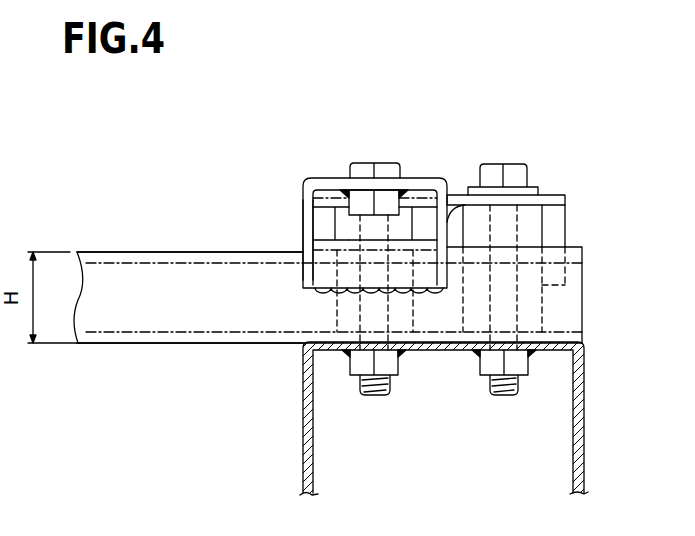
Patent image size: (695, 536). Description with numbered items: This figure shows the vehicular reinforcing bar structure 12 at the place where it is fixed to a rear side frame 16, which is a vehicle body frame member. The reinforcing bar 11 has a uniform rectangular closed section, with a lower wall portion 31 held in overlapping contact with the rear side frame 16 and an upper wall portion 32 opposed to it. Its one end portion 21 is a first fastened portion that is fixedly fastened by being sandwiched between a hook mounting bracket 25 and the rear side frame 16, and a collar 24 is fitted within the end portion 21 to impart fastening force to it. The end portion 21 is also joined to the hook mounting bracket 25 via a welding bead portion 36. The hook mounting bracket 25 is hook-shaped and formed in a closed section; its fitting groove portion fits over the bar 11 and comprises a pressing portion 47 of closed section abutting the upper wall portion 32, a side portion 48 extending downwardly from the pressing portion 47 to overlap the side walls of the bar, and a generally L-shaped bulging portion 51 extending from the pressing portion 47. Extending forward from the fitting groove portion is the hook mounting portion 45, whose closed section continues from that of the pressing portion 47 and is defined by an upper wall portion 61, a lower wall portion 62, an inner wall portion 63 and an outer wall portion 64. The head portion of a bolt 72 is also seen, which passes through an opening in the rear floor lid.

The reinforcing bar 11 is at (143, 219).
The vehicular reinforcing bar structure 12 is at (419, 244).
The rear side frame 16 is at (229, 484).
The one end portion 21 is at (257, 251).
The collar 24 is at (560, 307).
The hook mounting bracket 25 is at (540, 155).
The lower wall portion 31 is at (163, 345).
The upper wall portion 32 is at (175, 251).
The welding bead portion 36 is at (302, 250).
The hook mounting portion 45 is at (323, 177).
The pressing portion 47 is at (333, 250).
The side portion 48 is at (335, 286).
The bulging portion 51 is at (566, 213).
The upper wall portion 61 is at (407, 176).
The lower wall portion 62 is at (400, 268).
The inner wall portion 63 is at (302, 213).
The outer wall portion 64 is at (453, 198).
The bolt 72 is at (364, 163).